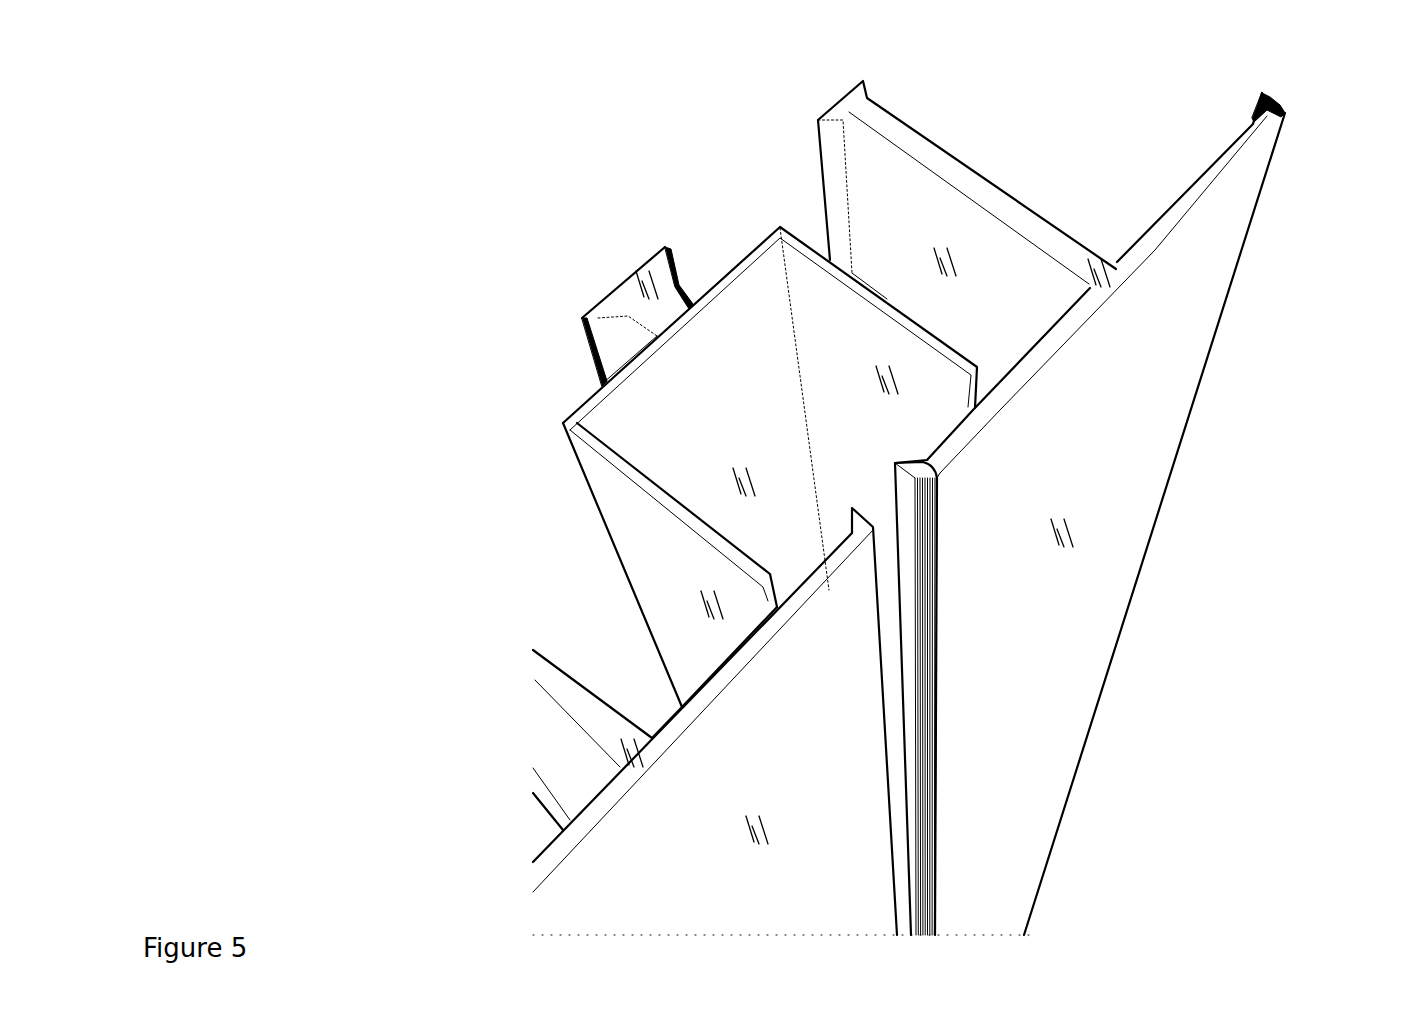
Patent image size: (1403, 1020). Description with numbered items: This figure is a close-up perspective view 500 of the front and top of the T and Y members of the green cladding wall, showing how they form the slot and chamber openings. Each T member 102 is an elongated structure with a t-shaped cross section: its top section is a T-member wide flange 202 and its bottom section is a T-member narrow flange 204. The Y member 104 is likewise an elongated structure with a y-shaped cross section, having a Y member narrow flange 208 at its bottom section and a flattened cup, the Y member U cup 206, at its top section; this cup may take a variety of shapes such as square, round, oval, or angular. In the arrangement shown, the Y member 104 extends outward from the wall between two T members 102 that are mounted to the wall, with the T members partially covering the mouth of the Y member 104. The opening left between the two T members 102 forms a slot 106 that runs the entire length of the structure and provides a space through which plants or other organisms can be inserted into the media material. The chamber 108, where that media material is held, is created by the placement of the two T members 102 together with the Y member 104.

The close-up front view of T and Y members 500 is at (379, 184).
The T member 102 is at (944, 488).
The Y member 104 is at (692, 491).
The slot 106 is at (891, 689).
The chamber 108 is at (693, 448).
The T-member wide flange 202 is at (1113, 495).
The T-member narrow flange 204 is at (850, 108).
The Y member U cup 206 is at (735, 272).
The Y member narrow flange 208 is at (633, 308).